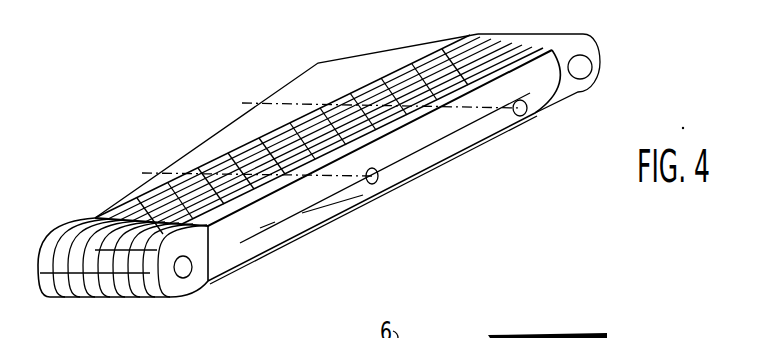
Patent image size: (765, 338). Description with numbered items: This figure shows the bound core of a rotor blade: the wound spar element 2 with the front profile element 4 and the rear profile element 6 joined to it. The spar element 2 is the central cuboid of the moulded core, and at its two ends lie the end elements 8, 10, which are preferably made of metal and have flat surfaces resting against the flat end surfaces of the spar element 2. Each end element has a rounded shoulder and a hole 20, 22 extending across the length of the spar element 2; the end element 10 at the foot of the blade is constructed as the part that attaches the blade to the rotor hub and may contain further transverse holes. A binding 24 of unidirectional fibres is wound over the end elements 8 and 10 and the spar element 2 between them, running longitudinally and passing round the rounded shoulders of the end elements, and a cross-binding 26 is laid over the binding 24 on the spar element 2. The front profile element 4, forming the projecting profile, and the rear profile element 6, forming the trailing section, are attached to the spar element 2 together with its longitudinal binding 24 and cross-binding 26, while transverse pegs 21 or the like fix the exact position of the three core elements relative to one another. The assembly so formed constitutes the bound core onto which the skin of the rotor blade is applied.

The spar element 2 is at (202, 163).
The front profile element 4 is at (477, 148).
The rear profile element 6 is at (308, 81).
The end element 8 is at (606, 87).
The end element 10 is at (79, 208).
The hole 20 is at (590, 64).
The transverse pegs 21 is at (528, 116).
The hole 22 is at (184, 273).
The binding 24 is at (114, 296).
The cross-binding 26 is at (415, 62).